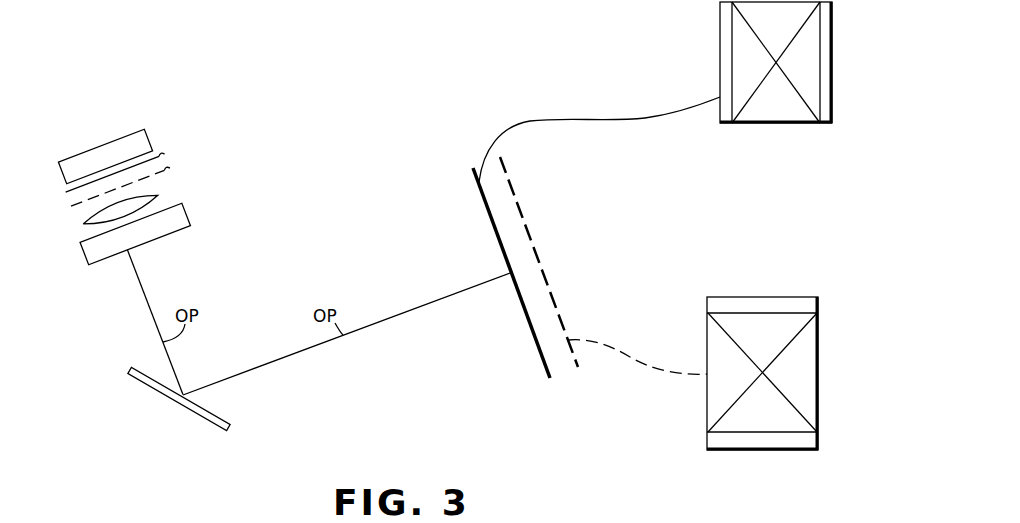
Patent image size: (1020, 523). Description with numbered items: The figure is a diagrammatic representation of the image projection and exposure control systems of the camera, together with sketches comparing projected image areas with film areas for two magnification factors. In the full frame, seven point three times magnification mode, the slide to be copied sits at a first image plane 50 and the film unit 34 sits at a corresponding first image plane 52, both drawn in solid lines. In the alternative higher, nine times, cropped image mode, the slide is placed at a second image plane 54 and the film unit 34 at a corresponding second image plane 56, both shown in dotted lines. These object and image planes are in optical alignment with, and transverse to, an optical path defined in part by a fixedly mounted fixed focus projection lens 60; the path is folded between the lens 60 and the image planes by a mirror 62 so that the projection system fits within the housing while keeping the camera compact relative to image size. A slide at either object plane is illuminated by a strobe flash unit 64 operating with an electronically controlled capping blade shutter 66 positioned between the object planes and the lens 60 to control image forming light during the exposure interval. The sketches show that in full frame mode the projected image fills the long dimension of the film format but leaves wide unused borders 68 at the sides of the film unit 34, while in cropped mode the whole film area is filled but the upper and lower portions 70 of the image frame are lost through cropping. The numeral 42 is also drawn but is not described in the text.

The film unit 34 is at (710, 131).
The housing 42 is at (131, 522).
The first image plane 50 is at (66, 193).
The first image plane 52 is at (476, 195).
The second image plane 54 is at (73, 210).
The second image plane 56 is at (528, 227).
The fixed focus projection lens 60 is at (158, 197).
The mirror 62 is at (210, 413).
The strobe flash unit 64 is at (150, 139).
The capping blade shutter 66 is at (186, 222).
The unused borders 68 is at (725, 42).
The upper and lower portions 70 is at (785, 303).